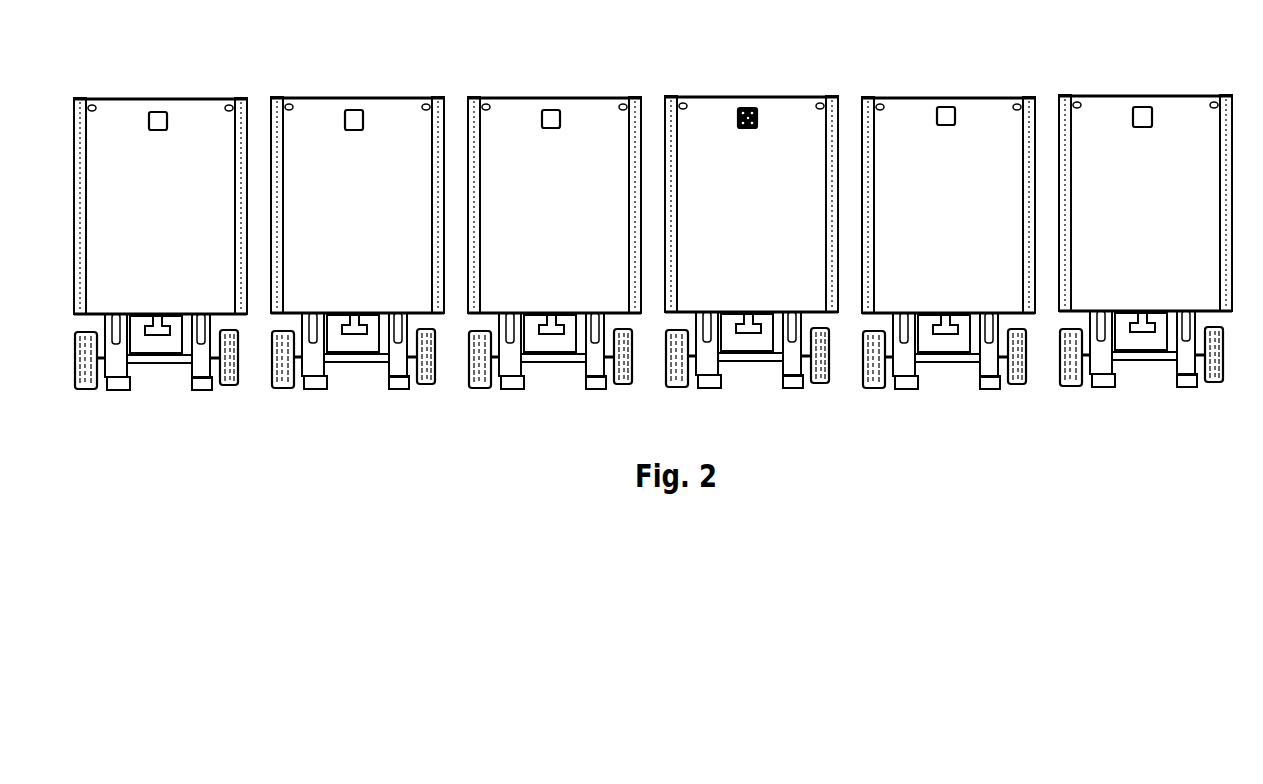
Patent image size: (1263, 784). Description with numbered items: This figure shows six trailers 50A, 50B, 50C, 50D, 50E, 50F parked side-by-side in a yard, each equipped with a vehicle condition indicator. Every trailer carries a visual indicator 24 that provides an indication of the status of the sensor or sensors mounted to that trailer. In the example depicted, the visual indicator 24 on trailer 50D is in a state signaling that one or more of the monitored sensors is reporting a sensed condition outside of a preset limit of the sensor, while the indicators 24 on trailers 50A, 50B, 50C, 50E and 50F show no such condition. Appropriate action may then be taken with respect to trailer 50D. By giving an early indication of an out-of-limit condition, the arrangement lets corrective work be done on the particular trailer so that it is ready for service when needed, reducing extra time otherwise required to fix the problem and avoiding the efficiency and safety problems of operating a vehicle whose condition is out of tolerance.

The trailer 50A is at (183, 98).
The trailer 50B is at (322, 97).
The trailer 50C is at (508, 97).
The trailer 50D is at (707, 95).
The trailer 50E is at (910, 97).
The trailer 50F is at (1093, 97).
The visual indicator 24 is at (152, 132).